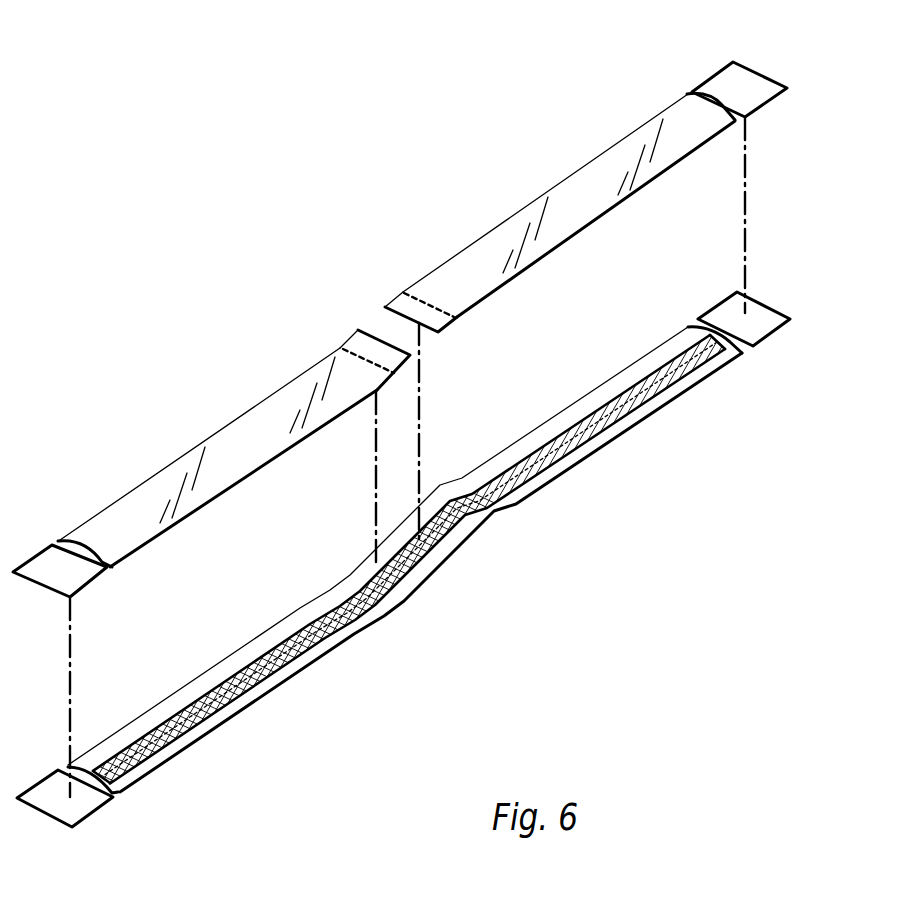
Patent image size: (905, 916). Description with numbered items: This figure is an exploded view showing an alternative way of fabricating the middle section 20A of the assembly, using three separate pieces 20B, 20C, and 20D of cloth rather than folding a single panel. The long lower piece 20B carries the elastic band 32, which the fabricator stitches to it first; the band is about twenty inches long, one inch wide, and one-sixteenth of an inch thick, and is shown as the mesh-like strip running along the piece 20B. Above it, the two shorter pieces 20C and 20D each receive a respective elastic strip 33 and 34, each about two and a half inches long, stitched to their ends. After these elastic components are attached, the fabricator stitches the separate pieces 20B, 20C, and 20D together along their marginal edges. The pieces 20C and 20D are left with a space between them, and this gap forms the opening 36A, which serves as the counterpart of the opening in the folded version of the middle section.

The middle section 20A is at (190, 136).
The piece of cloth 20B is at (597, 448).
The piece of cloth 20C is at (147, 492).
The piece of cloth 20D is at (603, 165).
The elastic band 32 is at (688, 368).
The elastic strip 33 is at (356, 356).
The elastic strip 34 is at (430, 297).
The opening 36A is at (371, 318).